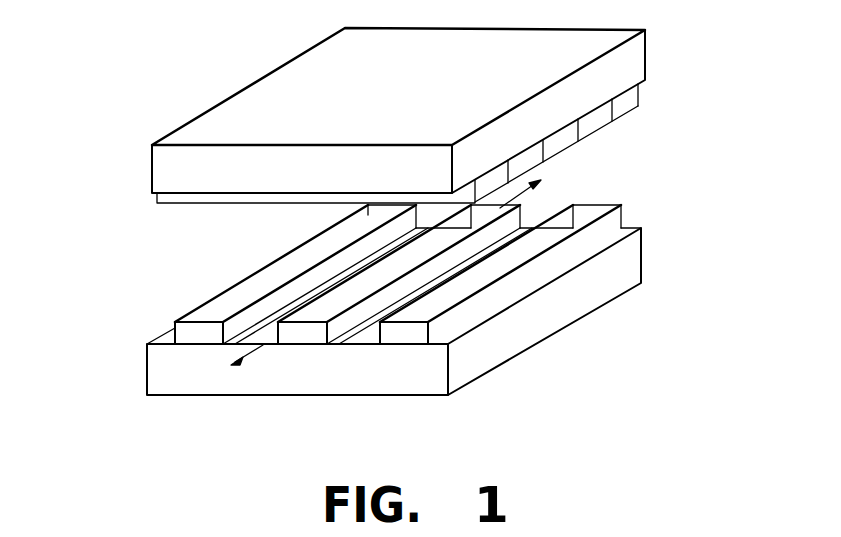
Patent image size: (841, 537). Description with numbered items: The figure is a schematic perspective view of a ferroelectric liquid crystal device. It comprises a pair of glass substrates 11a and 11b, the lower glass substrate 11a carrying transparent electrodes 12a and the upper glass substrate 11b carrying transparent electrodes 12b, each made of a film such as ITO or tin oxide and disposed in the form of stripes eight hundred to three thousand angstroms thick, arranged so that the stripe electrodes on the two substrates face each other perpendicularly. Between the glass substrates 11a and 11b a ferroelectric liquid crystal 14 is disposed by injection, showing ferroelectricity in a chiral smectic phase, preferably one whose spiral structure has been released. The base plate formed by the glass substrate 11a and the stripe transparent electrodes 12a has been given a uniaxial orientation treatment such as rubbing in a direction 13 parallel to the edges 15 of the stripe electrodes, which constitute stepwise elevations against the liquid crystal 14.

The glass substrate 11a is at (390, 377).
The glass substrate 11b is at (158, 165).
The transparent electrodes 12a is at (400, 335).
The transparent electrodes 12b is at (498, 170).
The rubbing direction 13 is at (420, 258).
The ferroelectric liquid crystal 14 is at (250, 231).
The edges of the stripe electrodes 15 is at (540, 257).